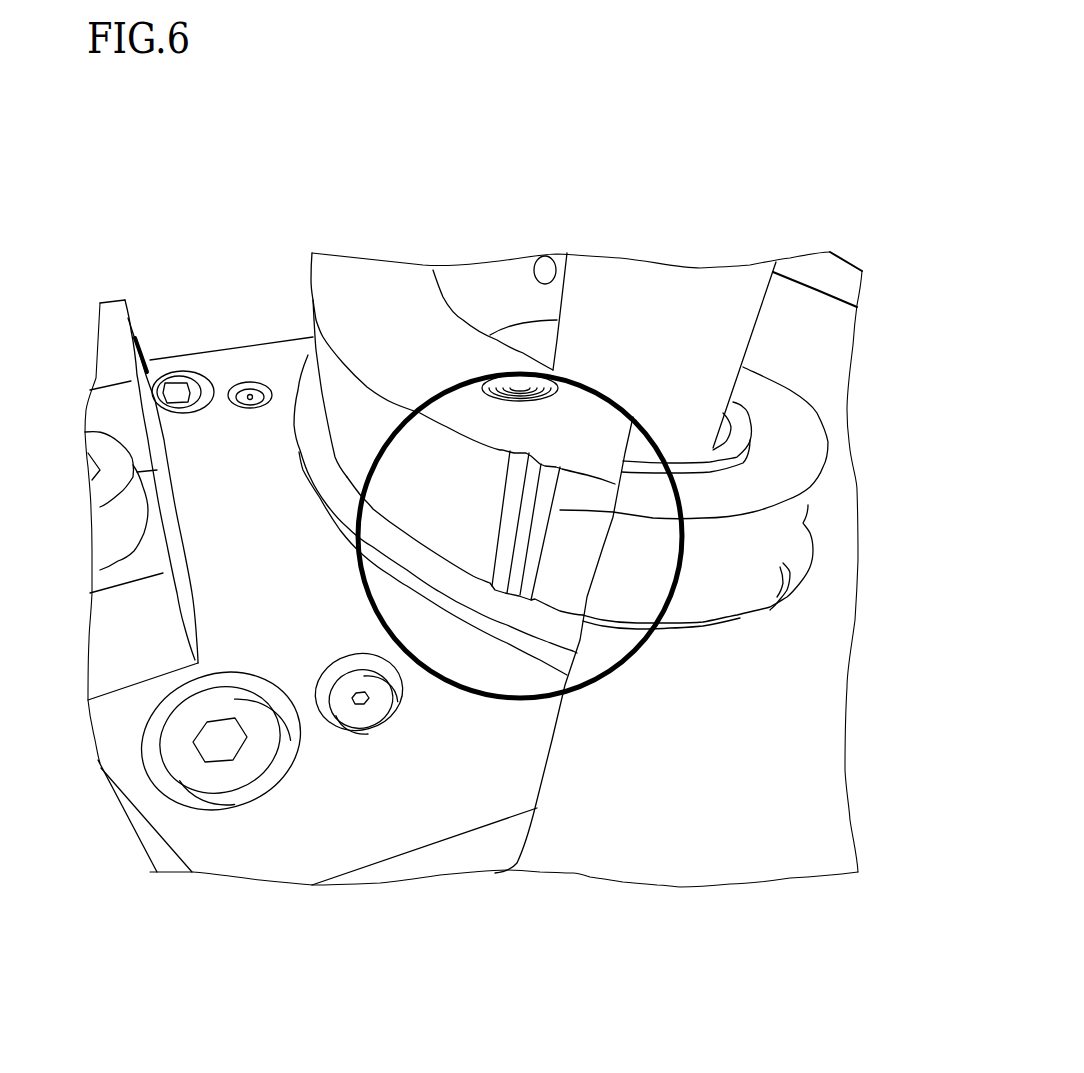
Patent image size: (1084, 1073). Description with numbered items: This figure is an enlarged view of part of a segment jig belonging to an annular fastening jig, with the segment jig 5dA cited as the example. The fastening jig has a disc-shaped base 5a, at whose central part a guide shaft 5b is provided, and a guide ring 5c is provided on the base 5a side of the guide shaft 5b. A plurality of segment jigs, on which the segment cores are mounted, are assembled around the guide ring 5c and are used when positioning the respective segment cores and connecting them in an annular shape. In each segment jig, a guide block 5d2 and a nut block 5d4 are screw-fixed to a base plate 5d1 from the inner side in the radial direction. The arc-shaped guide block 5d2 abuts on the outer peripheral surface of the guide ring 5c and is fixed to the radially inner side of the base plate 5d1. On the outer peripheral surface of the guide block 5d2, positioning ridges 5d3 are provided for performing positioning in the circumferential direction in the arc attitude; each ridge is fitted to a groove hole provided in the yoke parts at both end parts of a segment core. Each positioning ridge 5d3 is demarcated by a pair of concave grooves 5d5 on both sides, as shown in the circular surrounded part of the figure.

The base 5a is at (498, 569).
The guide shaft 5b is at (757, 325).
The guide ring 5c is at (812, 503).
The segment jig 5dA is at (372, 202).
The base plate 5d1 is at (265, 343).
The guide block 5d2 is at (370, 275).
The positioning ridge 5d3 is at (520, 535).
The nut block 5d4 is at (130, 330).
The concave groove 5d5 is at (495, 590).